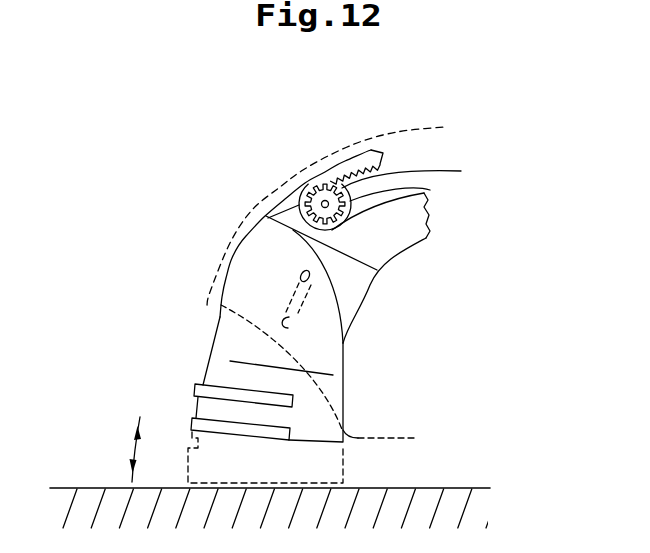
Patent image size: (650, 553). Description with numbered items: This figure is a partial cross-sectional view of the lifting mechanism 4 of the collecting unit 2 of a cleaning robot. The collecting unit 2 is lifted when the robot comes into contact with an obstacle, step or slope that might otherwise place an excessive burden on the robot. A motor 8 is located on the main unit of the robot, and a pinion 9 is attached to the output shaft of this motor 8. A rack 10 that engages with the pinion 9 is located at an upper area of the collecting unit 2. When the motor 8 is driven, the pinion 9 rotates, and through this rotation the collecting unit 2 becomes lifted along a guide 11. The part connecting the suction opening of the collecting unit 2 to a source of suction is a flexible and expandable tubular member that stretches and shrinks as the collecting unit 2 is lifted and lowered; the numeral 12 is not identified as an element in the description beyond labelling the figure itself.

The collecting unit 2 is at (167, 345).
The lifting mechanism 4 is at (270, 165).
The motor 8 is at (414, 172).
The pinion 9 is at (430, 190).
The rack 10 is at (371, 149).
The guide 11 is at (295, 310).
The sector segment 12 is at (389, 238).